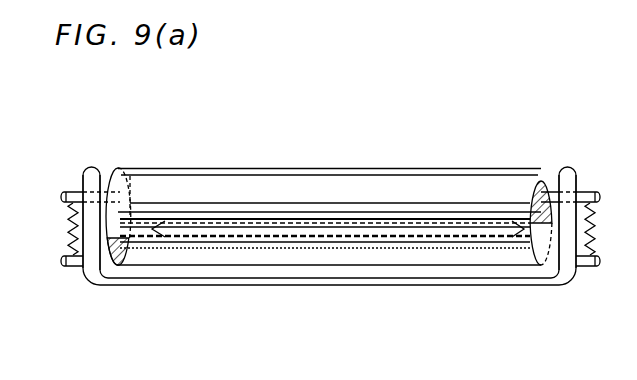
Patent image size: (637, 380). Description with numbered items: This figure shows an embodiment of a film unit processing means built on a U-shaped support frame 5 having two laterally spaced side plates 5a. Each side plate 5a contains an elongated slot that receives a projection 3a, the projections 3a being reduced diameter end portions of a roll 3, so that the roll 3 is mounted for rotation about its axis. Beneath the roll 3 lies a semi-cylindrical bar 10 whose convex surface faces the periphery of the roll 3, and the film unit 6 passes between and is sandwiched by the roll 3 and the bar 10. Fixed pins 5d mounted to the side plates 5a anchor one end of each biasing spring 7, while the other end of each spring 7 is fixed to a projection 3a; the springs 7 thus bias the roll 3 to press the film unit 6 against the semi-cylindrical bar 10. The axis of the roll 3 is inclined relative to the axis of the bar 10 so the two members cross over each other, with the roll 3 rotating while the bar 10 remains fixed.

The roll 3 is at (217, 181).
The projections 3a is at (82, 192).
The support frame 5 is at (329, 236).
The side plates 5a is at (92, 167).
The fixed pins 5d is at (65, 268).
The film unit 6 is at (279, 219).
The biasing springs 7 is at (68, 228).
The semi-cylindrical bar 10 is at (193, 258).